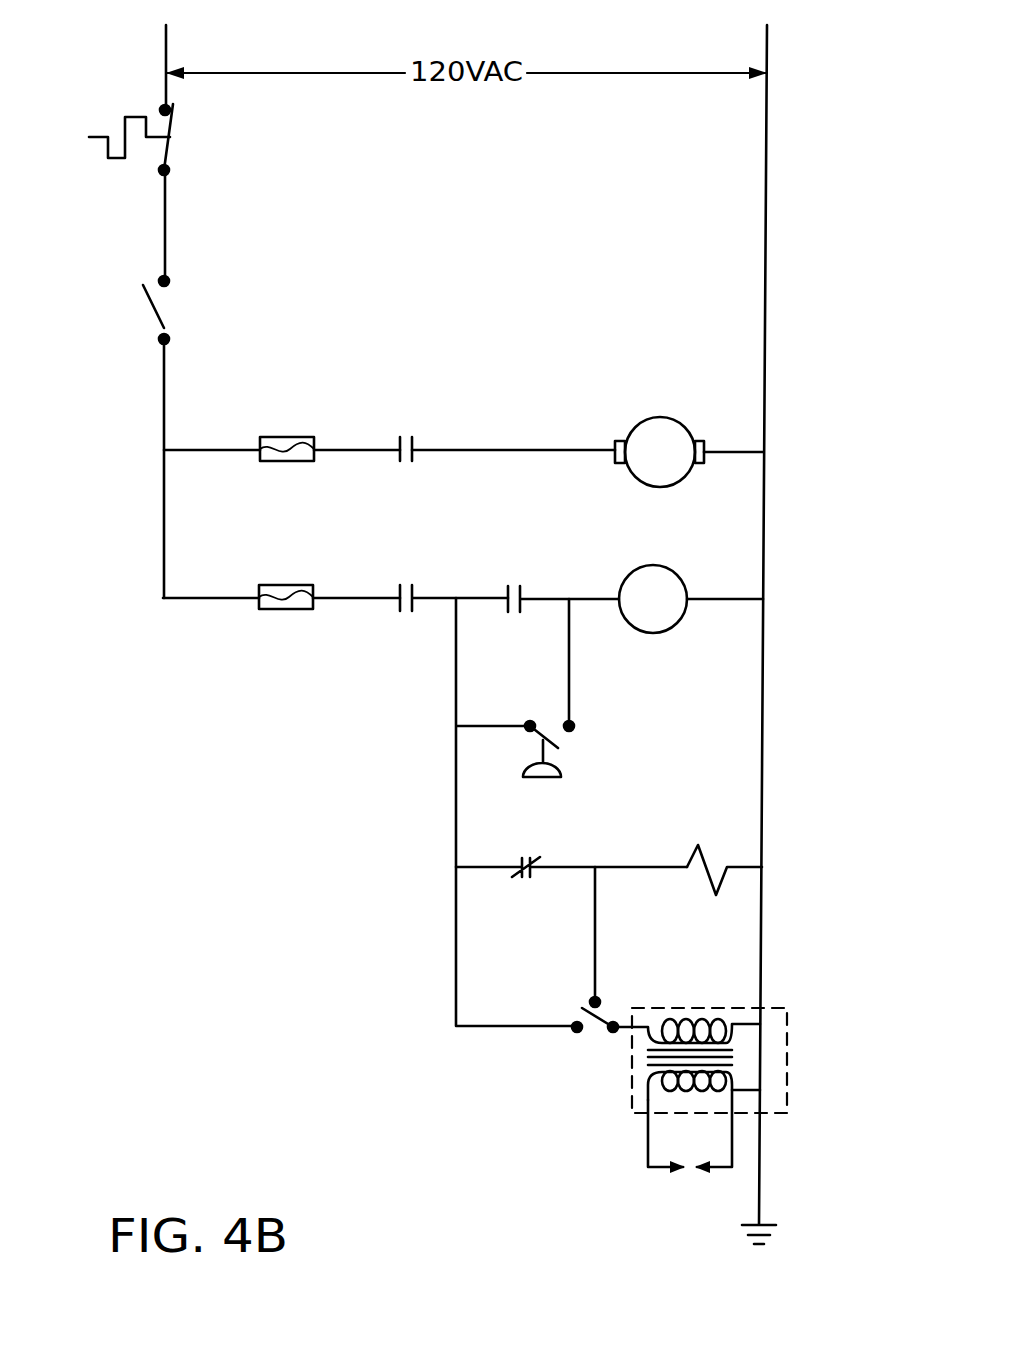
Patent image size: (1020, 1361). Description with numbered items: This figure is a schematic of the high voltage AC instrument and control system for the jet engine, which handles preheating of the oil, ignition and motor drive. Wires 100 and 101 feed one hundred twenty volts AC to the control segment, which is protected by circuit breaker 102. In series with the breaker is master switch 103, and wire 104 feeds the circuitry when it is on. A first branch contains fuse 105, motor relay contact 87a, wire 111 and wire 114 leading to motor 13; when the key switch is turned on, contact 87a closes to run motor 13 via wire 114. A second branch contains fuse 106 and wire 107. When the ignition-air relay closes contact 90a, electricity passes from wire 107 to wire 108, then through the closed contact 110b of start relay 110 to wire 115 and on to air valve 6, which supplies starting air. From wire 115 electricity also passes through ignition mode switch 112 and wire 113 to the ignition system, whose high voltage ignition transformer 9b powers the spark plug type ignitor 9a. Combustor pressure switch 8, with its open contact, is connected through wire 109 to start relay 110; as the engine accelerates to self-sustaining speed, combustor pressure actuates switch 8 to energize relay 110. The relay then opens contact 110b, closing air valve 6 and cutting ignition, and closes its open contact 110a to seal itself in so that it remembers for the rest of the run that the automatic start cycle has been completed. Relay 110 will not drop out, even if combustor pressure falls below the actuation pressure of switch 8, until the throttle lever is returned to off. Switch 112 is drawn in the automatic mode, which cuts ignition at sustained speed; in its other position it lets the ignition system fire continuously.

The wire 100 is at (173, 299).
The wire 101 is at (690, 1235).
The circuit breaker 102 is at (170, 127).
The master switch 103 is at (164, 328).
The wire 104 is at (164, 407).
The fuse 105 is at (282, 436).
The fuse 106 is at (300, 584).
The wire 107 is at (380, 598).
The wire 108 is at (456, 760).
The wire 109 is at (569, 656).
The start relay 110 is at (691, 599).
The open contact 110a is at (522, 604).
The closed contact 110b is at (518, 875).
The wire 111 is at (358, 451).
The ignition mode switch 112 is at (600, 1018).
The wire 113 is at (633, 1030).
The wire 114 is at (503, 450).
The wire 115 is at (613, 870).
The motor 13 is at (689, 452).
The air valve 6 is at (707, 860).
The combustor pressure switch 8 is at (540, 745).
The motor relay contact 87a is at (399, 437).
The contact 90a is at (400, 584).
The spark plug type ignitor 9a is at (649, 1155).
The high voltage ignition transformer 9b is at (633, 1100).